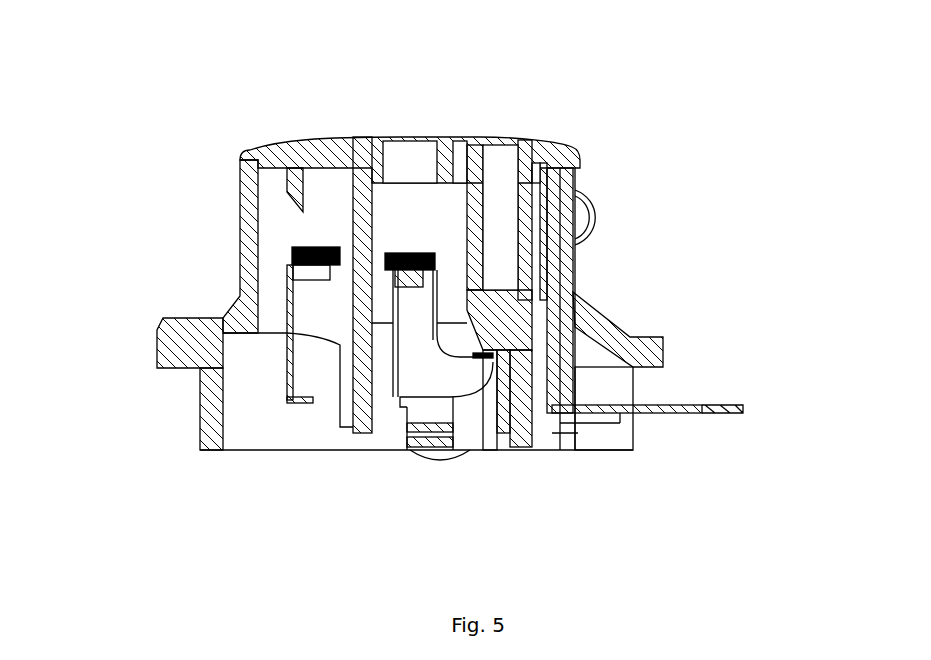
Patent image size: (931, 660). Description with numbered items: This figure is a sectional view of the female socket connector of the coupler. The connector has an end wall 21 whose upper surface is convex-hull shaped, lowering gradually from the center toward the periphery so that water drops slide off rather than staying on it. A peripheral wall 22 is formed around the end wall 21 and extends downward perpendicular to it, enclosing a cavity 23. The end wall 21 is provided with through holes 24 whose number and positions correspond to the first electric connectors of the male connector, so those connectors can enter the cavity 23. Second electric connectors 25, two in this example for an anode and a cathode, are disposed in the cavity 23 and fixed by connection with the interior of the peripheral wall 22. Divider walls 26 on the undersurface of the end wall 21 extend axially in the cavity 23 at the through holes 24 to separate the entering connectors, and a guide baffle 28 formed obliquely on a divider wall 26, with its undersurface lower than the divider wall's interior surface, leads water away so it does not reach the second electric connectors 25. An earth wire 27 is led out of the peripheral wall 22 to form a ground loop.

The end wall 21 is at (262, 157).
The peripheral wall 22 is at (222, 308).
The cavity 23 is at (262, 423).
The through hole 24 is at (419, 155).
The second electric connector 25 is at (287, 373).
The divider wall 26 is at (357, 200).
The earth wire 27 is at (617, 408).
The guide baffle 28 is at (325, 229).